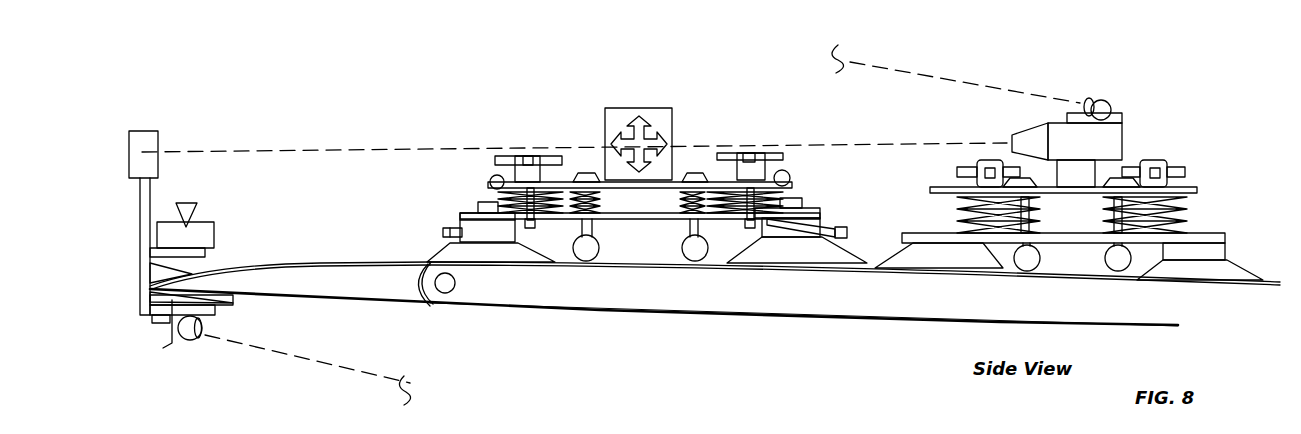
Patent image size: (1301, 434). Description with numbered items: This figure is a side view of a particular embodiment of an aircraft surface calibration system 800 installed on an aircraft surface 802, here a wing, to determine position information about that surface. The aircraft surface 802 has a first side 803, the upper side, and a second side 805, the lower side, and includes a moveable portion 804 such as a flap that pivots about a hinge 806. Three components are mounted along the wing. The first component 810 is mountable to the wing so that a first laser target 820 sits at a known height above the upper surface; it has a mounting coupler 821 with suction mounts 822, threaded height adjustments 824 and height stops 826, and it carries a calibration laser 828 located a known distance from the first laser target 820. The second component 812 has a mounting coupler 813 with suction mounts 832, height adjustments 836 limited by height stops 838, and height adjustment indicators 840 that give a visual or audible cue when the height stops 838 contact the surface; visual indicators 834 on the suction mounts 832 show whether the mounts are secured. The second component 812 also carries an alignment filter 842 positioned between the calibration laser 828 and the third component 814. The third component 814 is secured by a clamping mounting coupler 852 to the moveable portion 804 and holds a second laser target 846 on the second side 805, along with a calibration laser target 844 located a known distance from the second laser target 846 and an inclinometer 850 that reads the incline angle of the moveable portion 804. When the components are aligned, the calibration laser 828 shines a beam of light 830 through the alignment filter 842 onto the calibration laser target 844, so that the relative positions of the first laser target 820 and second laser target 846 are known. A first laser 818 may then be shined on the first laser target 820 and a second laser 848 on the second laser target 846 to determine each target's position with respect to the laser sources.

The aircraft surface calibration system 800 is at (470, 51).
The aircraft surface 802 is at (710, 317).
The first side 803 is at (300, 259).
The moveable portion 804 is at (323, 297).
The second side 805 is at (624, 326).
The hinge 806 is at (446, 288).
The first component 810 is at (1180, 123).
The second component 812 is at (553, 122).
The mounting coupler 813 is at (462, 212).
The third component 814 is at (230, 193).
The first laser 818 is at (927, 73).
The first laser target 820 is at (1102, 96).
The mounting coupler 821 is at (1187, 207).
The suction mounts 822 is at (1230, 257).
The height adjustments 824 is at (1170, 158).
The height stops 826 is at (1105, 273).
The calibration laser 828 is at (1013, 133).
The beam of light 830 is at (857, 143).
The suction mounts 832 is at (448, 246).
The visual indicators 834 is at (835, 223).
The height adjustments 836 is at (783, 158).
The height stops 838 is at (695, 258).
The height adjustment indicators 840 is at (489, 182).
The alignment filter 842 is at (672, 108).
The calibration laser target 844 is at (160, 133).
The second laser target 846 is at (200, 333).
The second laser 848 is at (330, 368).
The inclinometer 850 is at (214, 224).
The mounting coupler 852 is at (146, 330).